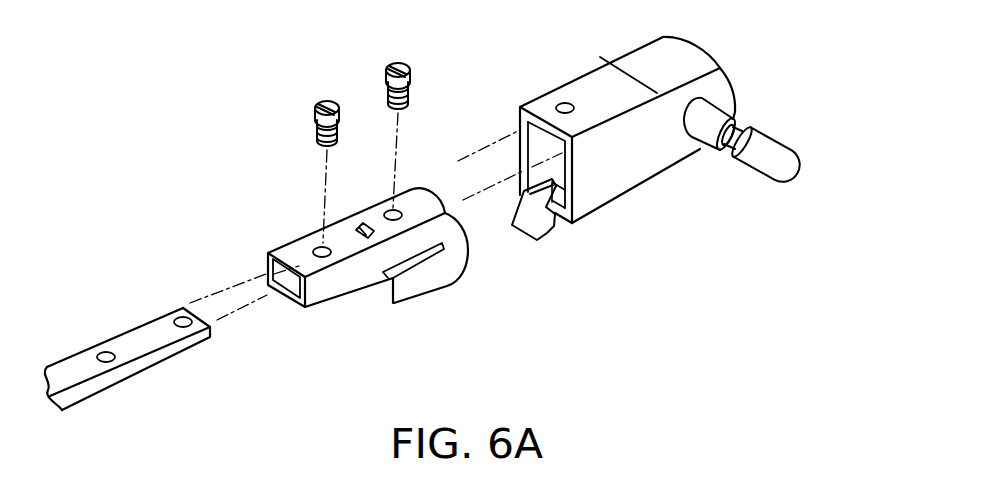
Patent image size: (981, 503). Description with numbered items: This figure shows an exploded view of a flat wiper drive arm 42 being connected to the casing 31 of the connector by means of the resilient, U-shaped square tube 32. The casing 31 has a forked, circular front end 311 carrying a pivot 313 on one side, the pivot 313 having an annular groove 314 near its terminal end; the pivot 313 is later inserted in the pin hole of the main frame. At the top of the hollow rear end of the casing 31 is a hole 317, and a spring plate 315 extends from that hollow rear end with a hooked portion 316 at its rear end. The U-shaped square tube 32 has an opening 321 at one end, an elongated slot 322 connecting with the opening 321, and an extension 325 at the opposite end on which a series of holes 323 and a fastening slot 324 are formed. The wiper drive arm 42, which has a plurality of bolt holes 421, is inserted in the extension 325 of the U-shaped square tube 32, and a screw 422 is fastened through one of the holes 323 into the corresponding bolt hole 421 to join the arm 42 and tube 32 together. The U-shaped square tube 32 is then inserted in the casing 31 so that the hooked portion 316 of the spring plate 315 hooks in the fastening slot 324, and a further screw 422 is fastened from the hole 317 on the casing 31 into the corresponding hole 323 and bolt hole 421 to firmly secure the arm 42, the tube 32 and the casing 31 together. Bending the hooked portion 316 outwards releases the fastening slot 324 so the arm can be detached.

The casing 31 is at (600, 72).
The rounded end of housing 311 is at (723, 83).
The pivot 313 is at (712, 127).
The annular groove 314 is at (740, 134).
The spring plate 315 is at (584, 206).
The hooked portion 316 is at (547, 241).
The hole 317 is at (563, 102).
The U-shaped square tube 32 is at (426, 186).
The opening 321 is at (388, 279).
The elongated slot 322 is at (447, 251).
The holes 323 is at (318, 250).
The fastening slot 324 is at (366, 226).
The extension 325 is at (314, 266).
The wiper drive arm 42 is at (143, 333).
The bolt holes 421 is at (183, 323).
The screw 422 is at (328, 100).